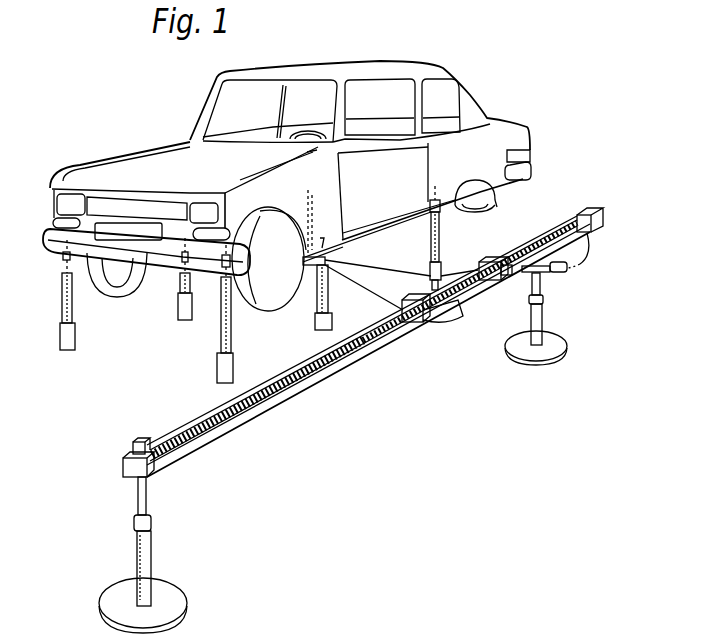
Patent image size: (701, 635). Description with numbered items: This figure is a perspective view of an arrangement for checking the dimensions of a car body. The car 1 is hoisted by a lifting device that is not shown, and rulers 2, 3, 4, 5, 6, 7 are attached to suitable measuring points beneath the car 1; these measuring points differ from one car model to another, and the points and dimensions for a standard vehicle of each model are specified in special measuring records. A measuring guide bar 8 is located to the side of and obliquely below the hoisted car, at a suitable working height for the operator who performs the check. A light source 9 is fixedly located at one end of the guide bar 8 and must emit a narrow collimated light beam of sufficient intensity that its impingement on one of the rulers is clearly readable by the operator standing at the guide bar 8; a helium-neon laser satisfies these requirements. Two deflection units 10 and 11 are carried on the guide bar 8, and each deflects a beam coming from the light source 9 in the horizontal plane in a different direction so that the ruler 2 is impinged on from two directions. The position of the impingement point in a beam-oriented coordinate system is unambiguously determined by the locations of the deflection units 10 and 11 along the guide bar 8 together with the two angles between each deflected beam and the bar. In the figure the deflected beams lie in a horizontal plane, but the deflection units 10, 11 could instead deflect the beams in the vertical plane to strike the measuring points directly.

The car 1 is at (123, 165).
The ruler 2 is at (310, 298).
The ruler 3 is at (441, 251).
The ruler 4 is at (185, 322).
The ruler 5 is at (339, 313).
The ruler 6 is at (75, 340).
The ruler 7 is at (235, 372).
The measuring guide bar 8 is at (270, 403).
The light source 9 is at (604, 218).
The deflection unit 10 is at (491, 285).
The deflection unit 11 is at (420, 326).